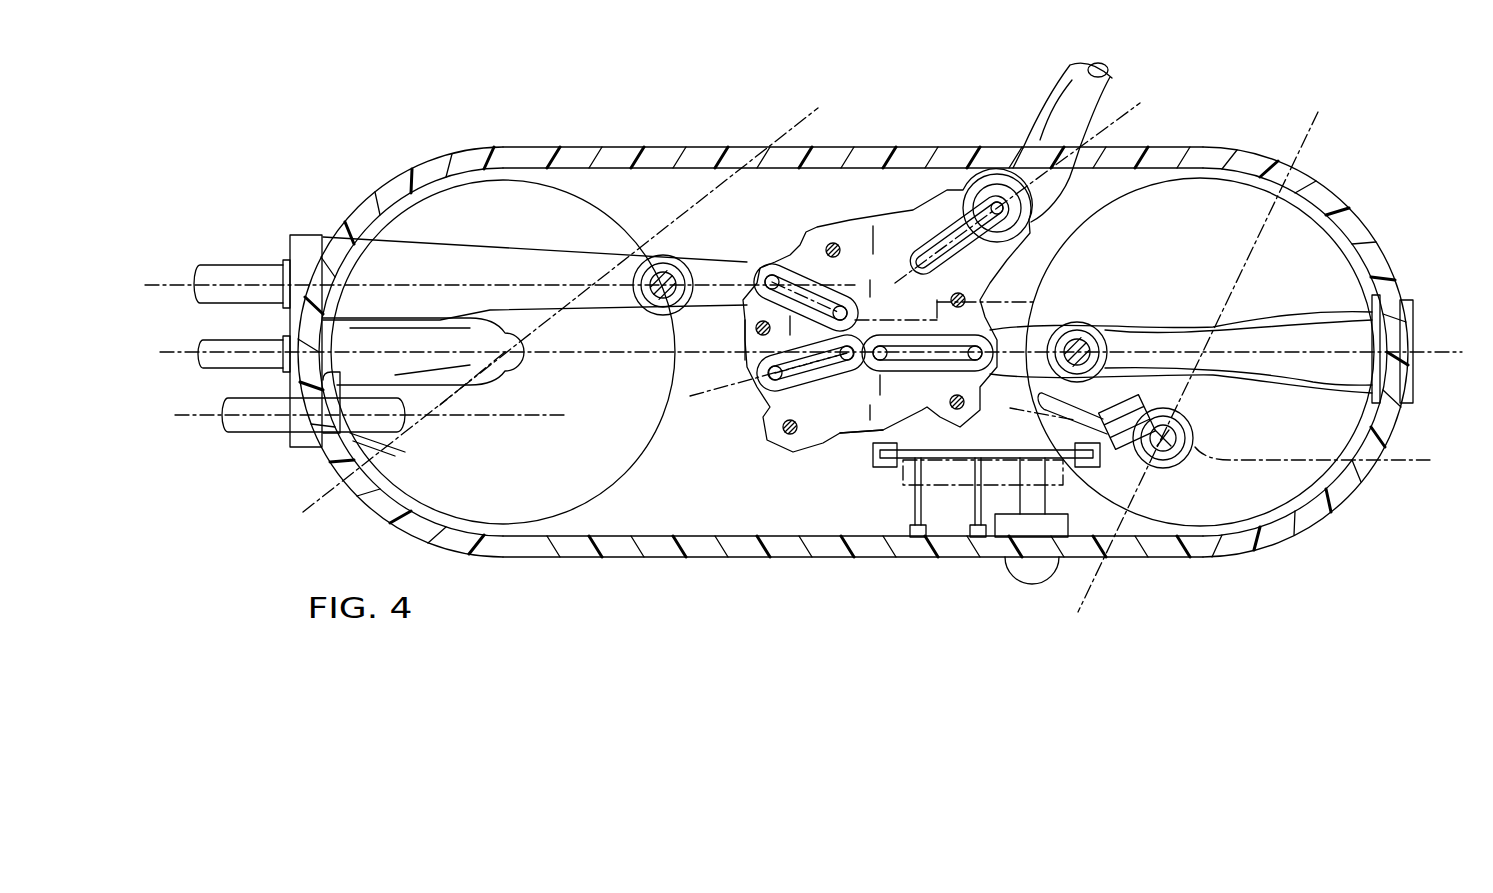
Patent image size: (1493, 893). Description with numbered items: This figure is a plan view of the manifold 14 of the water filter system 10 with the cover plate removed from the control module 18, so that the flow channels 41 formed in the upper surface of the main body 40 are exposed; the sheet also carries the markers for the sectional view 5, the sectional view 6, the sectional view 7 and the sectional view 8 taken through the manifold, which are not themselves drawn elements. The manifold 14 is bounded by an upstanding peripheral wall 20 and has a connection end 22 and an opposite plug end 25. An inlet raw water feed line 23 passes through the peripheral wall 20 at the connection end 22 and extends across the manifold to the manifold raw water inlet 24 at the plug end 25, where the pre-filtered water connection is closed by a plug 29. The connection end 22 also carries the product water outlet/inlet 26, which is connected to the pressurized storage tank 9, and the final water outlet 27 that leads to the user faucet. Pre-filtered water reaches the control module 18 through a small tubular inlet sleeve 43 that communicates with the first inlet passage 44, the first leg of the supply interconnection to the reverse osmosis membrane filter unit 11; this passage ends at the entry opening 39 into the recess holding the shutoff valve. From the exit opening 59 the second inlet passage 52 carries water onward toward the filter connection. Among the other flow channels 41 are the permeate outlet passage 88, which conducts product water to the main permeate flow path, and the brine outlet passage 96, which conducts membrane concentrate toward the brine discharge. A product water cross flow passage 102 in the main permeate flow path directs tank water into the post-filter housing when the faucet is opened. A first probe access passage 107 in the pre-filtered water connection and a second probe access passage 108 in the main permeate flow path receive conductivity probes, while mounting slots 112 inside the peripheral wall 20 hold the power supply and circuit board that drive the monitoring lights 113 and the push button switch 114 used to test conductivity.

The water filter system 10 is at (626, 130).
The manifold 14 is at (699, 186).
The control module 18 is at (904, 238).
The peripheral wall 20 is at (648, 546).
The connection end 22 is at (336, 232).
The inlet raw water feed line 23 is at (393, 437).
The manifold raw water inlet 24 is at (1195, 429).
The plug end 25 is at (1404, 284).
The product water outlet/inlet 26 is at (282, 266).
The final water outlet 27 is at (283, 346).
The plug 29 is at (1411, 317).
The entry opening 39 is at (878, 322).
The main body 40 is at (869, 215).
The flow channels 41 is at (798, 283).
The tubular inlet sleeve 43 is at (975, 358).
The first inlet passage 44 is at (912, 366).
The second inlet passage 52 is at (745, 349).
The exit opening 59 is at (845, 373).
The permeate outlet passage 88 is at (806, 292).
The brine outlet passage 96 is at (987, 182).
The product water cross flow passage 102 is at (603, 316).
The first probe access passage 107 is at (1068, 335).
The second probe access passage 108 is at (660, 270).
The mounting slots 112 is at (1163, 468).
The monitoring lights 113 is at (976, 540).
The push button switch 114 is at (1033, 572).
The section line 5 is at (168, 415).
The section line 6 is at (1285, 100).
The section line 7 is at (680, 394).
The hose 8 is at (1165, 125).
The pressurized storage tank 9 is at (138, 284).
The reverse osmosis membrane filter unit 11 is at (152, 351).